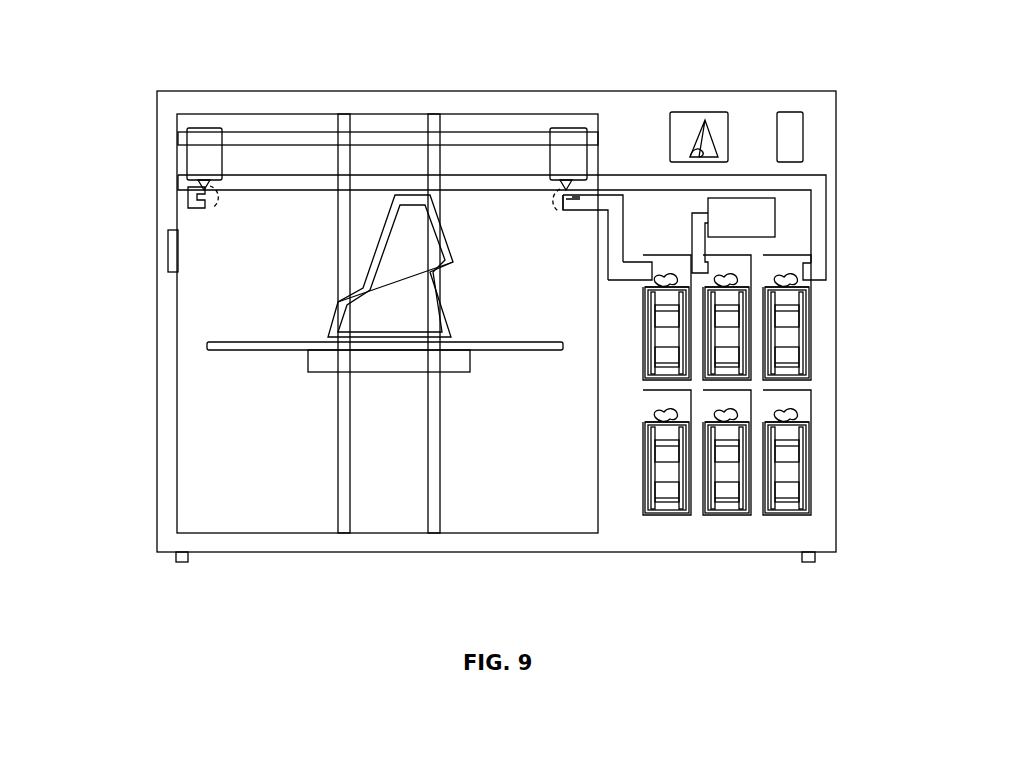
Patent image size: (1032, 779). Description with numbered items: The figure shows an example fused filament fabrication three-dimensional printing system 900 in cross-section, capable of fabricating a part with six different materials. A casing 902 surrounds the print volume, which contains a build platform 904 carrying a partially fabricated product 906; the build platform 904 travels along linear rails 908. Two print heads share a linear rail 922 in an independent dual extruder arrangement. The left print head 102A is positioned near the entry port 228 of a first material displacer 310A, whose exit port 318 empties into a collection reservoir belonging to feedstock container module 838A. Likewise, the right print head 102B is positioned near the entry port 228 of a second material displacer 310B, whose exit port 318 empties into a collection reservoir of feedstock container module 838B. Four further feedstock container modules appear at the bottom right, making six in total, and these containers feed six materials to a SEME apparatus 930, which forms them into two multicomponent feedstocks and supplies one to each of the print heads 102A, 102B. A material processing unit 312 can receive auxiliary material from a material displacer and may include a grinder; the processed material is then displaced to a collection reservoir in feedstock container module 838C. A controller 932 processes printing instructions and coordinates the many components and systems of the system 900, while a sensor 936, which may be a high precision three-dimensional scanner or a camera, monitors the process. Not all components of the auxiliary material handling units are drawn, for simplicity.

The FFF 3D printing system 900 is at (128, 58).
The casing 902 is at (178, 390).
The build platform 904 is at (207, 347).
The partially fabricated product 906 is at (338, 305).
The linear rails 908 is at (435, 125).
The linear rail 922 is at (299, 132).
The sensor 936 is at (168, 248).
The left print head 102A is at (215, 128).
The right print head 102B is at (577, 128).
The entry port 228 is at (191, 206).
The first material displacer 310A is at (485, 178).
The material displacer 310B is at (608, 204).
The exit port 318 is at (805, 272).
The material processing unit 312 is at (768, 209).
The SEME apparatus 930 is at (717, 118).
The controller 932 is at (797, 131).
The feedstock container module 838A is at (805, 330).
The feedstock container module 838B is at (652, 338).
The feedstock container module 838C is at (740, 360).